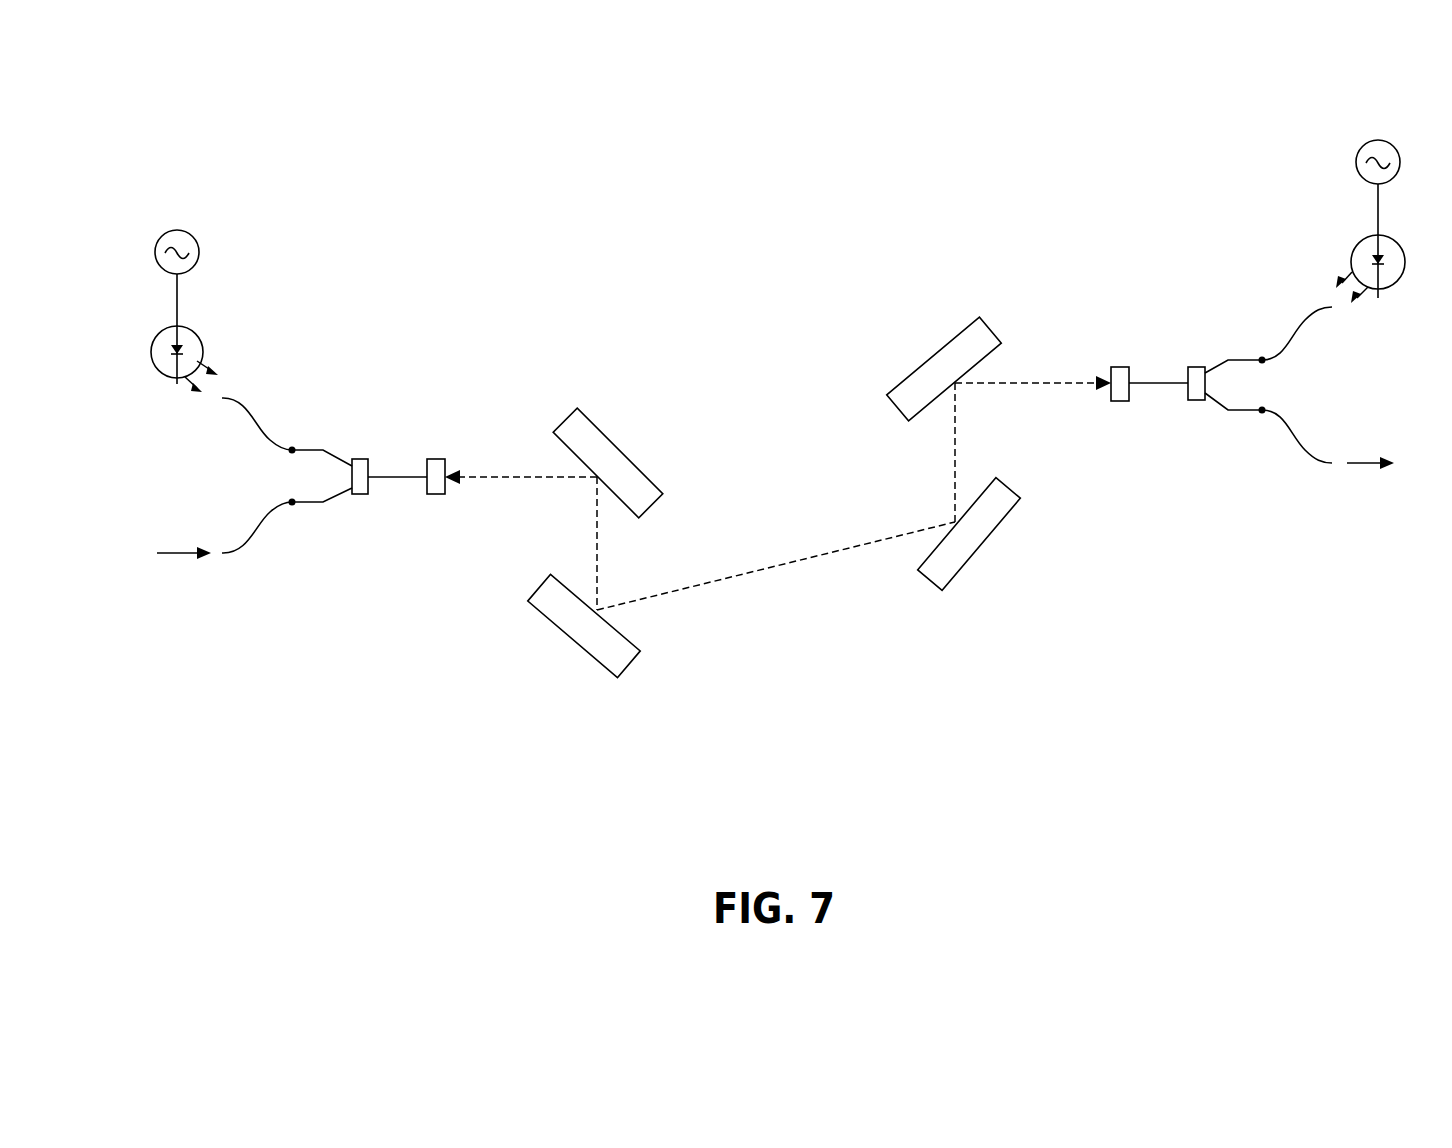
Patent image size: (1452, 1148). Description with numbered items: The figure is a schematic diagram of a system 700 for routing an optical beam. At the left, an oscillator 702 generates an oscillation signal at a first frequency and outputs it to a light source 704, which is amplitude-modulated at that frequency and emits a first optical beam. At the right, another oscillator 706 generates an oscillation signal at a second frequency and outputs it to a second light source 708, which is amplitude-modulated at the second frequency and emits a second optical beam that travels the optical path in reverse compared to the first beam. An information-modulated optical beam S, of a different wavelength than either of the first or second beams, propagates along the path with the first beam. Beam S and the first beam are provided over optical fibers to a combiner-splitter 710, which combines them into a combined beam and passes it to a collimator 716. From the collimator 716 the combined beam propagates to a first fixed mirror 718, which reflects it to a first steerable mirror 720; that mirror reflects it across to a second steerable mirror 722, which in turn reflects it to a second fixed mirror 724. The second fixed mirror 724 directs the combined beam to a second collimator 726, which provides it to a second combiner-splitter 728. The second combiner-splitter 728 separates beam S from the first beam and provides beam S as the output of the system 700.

The system 700 is at (202, 147).
The oscillator 702 is at (192, 228).
The light source 704 is at (192, 328).
The oscillator 706 is at (1370, 140).
The second light source 708 is at (1368, 237).
The combiner-splitter 710 is at (362, 494).
The collimator 716 is at (442, 459).
The first fixed mirror 718 is at (602, 423).
The first steerable mirror 720 is at (548, 633).
The second steerable mirror 722 is at (983, 547).
The second fixed mirror 724 is at (962, 323).
The second collimator 726 is at (1125, 367).
The second combiner-splitter 728 is at (1193, 400).